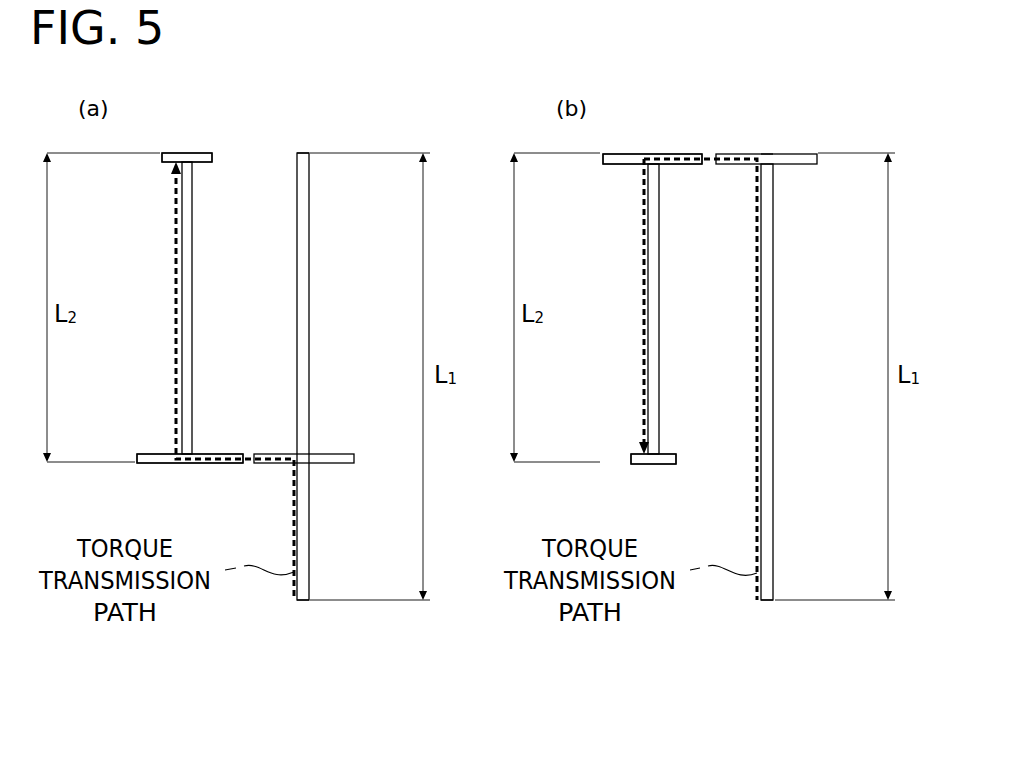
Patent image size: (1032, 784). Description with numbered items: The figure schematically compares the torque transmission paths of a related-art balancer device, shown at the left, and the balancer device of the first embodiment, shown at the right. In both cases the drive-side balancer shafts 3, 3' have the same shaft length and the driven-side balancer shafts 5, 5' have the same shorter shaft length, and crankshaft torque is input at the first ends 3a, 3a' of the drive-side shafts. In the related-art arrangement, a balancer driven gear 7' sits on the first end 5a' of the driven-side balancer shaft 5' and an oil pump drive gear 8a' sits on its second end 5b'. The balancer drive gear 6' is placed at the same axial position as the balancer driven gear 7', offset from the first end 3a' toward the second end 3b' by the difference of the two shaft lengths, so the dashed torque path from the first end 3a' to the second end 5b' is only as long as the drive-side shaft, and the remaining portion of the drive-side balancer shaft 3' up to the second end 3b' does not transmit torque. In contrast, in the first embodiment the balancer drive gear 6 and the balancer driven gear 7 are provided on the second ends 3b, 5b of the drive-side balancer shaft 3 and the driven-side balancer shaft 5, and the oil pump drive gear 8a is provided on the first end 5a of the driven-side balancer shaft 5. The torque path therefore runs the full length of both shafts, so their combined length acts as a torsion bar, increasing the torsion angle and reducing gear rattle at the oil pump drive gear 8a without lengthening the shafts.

The drive-side balancer shaft 3 is at (789, 382).
The first end 3a is at (790, 628).
The second end 3b is at (766, 121).
The driven-side balancer shaft 5 is at (676, 309).
The first end 5a is at (664, 485).
The second end 5b is at (652, 126).
The balancer drive gear 6 is at (767, 126).
The balancer driven gear 7 is at (654, 126).
The oil pump drive gear 8a is at (644, 485).
The drive-side balancer shaft 3' is at (328, 376).
The first end 3a' is at (328, 627).
The second end 3b' is at (316, 120).
The driven-side balancer shaft 5' is at (213, 308).
The first end 5a' is at (190, 484).
The second end 5b' is at (187, 125).
The balancer drive gear 6' is at (302, 484).
The balancer driven gear 7' is at (189, 484).
The oil pump drive gear 8a' is at (209, 125).